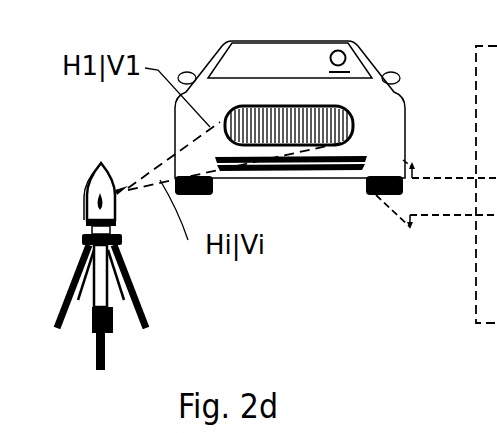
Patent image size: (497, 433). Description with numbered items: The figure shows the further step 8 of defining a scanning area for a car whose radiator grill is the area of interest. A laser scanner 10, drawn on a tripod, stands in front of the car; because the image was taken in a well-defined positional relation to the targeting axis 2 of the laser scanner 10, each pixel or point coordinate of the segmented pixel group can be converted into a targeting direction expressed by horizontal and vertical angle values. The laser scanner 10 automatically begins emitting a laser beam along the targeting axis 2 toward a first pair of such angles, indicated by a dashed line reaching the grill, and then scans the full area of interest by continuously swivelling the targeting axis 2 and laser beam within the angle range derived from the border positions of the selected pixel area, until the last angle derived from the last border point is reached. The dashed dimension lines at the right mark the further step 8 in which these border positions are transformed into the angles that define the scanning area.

The laser scanner 10 is at (73, 208).
The targeting axis 2 is at (140, 148).
The further step 8 is at (436, 184).